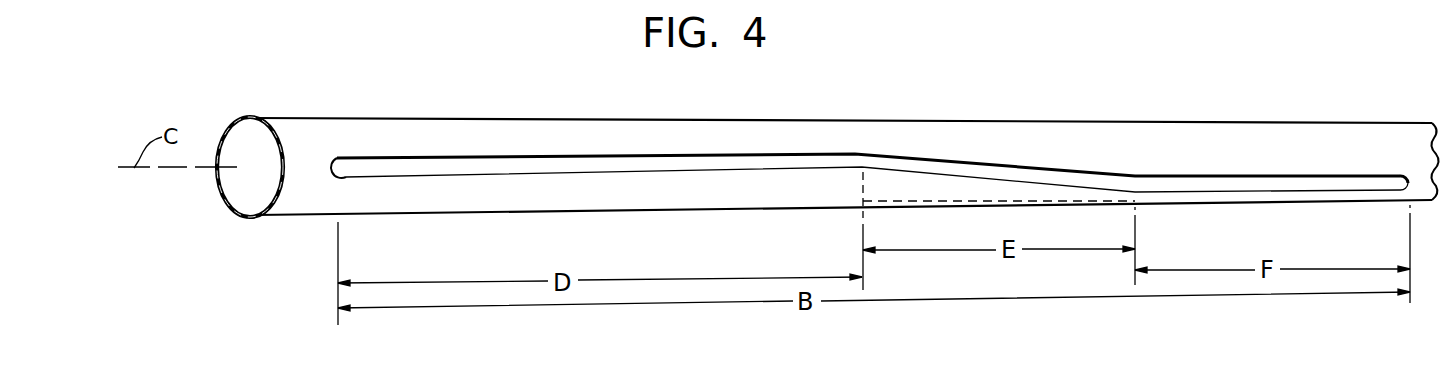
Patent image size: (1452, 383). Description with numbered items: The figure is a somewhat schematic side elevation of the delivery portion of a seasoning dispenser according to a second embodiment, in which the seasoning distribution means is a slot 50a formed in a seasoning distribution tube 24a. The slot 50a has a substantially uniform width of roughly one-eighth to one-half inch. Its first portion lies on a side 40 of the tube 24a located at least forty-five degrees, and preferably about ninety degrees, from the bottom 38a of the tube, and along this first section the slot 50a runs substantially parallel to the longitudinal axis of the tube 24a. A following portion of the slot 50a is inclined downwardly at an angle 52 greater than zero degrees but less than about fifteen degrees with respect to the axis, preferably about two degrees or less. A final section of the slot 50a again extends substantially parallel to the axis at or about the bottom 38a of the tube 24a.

The tube 24a is at (1038, 131).
The bottom of the tube 38a is at (266, 200).
The side of the tube 40 is at (322, 169).
The slot 50a is at (637, 156).
The angle 52 is at (1084, 193).